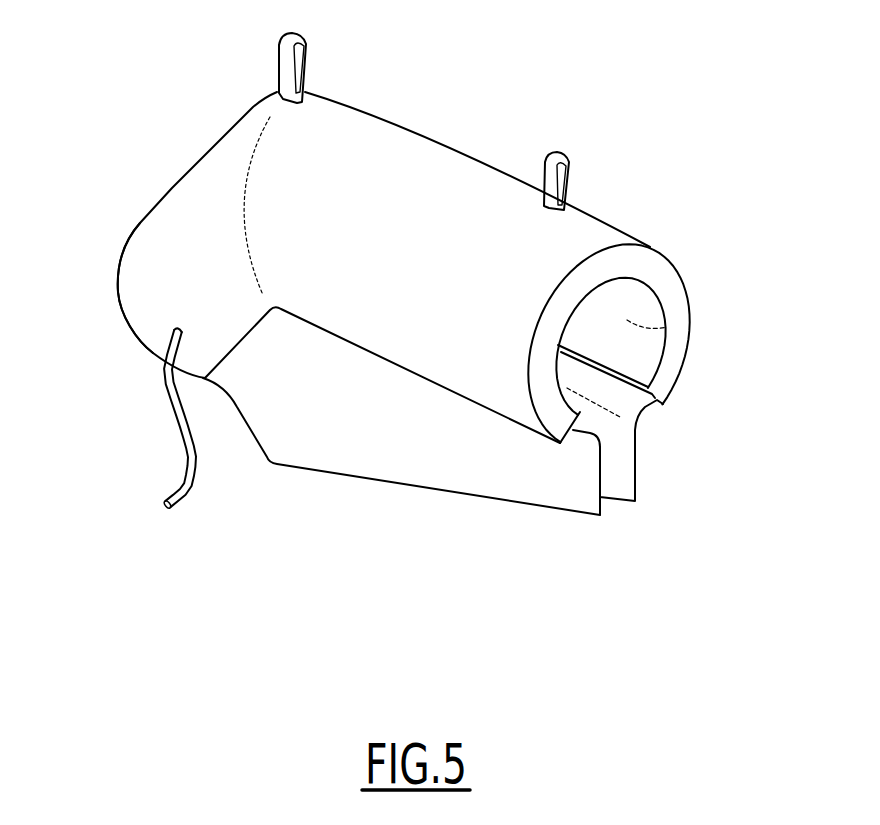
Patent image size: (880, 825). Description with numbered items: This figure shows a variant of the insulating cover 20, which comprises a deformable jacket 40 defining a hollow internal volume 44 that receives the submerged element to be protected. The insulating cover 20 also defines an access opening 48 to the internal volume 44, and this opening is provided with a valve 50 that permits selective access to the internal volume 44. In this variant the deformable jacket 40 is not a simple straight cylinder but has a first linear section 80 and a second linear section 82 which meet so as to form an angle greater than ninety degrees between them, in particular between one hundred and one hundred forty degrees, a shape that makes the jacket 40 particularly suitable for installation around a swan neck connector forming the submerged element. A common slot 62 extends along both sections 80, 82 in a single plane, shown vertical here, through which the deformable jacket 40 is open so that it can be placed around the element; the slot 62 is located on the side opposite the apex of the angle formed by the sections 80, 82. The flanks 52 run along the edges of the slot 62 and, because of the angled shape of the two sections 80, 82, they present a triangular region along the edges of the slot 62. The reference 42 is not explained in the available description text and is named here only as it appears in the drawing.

The insulating cover 20 is at (409, 288).
The deformable jacket 40 is at (170, 187).
The sleeve body 42 is at (403, 100).
The internal volume 44 is at (667, 325).
The access opening 48 is at (177, 329).
The valve 50 is at (160, 504).
The flanks 52 is at (450, 452).
The slot 62 is at (615, 395).
The first linear section 80 is at (157, 271).
The second linear section 82 is at (642, 263).